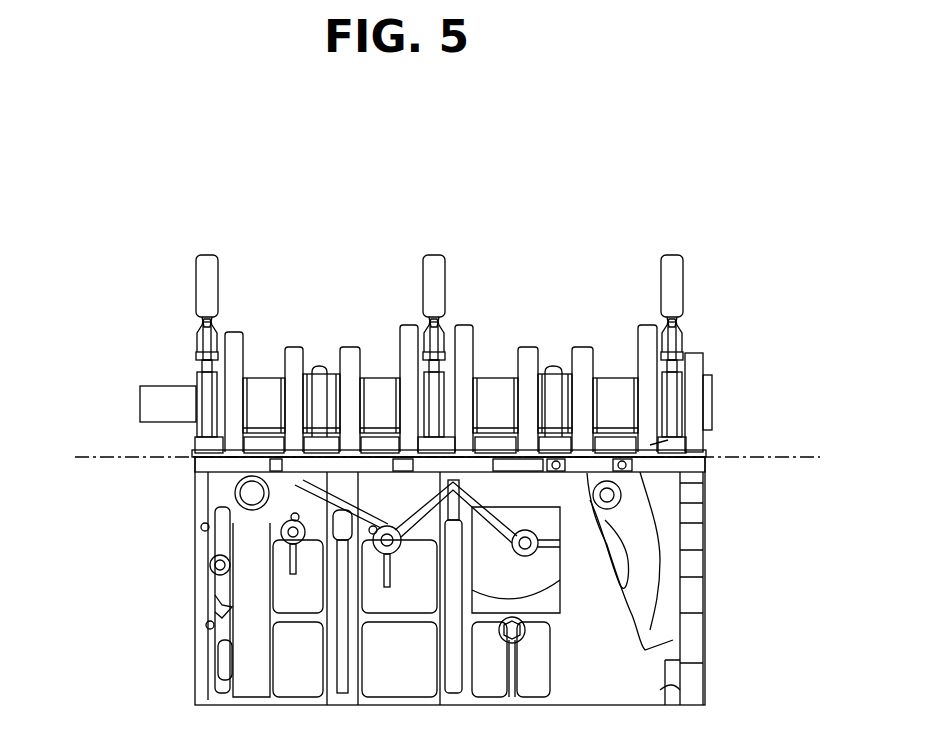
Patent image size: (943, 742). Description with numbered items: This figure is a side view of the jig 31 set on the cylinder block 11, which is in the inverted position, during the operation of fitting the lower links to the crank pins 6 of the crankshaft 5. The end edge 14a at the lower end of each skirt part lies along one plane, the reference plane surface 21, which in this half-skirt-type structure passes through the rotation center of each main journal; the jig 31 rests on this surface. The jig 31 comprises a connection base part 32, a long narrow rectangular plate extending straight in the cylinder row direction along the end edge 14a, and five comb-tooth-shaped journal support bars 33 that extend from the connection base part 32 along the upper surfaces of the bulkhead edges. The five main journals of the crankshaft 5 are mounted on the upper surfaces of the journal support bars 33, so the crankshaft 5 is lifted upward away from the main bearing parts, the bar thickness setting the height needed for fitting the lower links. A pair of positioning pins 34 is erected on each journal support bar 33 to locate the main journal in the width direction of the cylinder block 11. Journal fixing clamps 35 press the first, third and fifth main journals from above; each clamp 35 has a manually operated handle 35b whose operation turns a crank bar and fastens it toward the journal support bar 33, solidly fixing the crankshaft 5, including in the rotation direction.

The crankshaft 5 is at (137, 397).
The crank pin 6 is at (258, 395).
The cylinder block 11 is at (190, 660).
The end edge 14a is at (600, 452).
The reference plane surface 21 is at (95, 457).
The jig 31 is at (190, 444).
The connection base part 32 is at (270, 420).
The journal support bar 33 is at (323, 443).
The positioning pin 34 is at (205, 400).
The journal fixing clamp 35 is at (205, 362).
The handle 35b is at (207, 275).